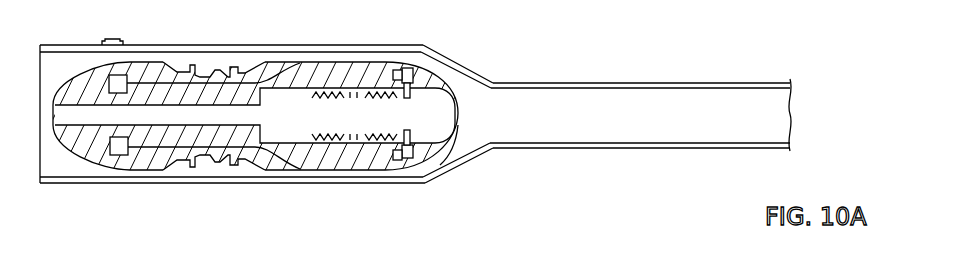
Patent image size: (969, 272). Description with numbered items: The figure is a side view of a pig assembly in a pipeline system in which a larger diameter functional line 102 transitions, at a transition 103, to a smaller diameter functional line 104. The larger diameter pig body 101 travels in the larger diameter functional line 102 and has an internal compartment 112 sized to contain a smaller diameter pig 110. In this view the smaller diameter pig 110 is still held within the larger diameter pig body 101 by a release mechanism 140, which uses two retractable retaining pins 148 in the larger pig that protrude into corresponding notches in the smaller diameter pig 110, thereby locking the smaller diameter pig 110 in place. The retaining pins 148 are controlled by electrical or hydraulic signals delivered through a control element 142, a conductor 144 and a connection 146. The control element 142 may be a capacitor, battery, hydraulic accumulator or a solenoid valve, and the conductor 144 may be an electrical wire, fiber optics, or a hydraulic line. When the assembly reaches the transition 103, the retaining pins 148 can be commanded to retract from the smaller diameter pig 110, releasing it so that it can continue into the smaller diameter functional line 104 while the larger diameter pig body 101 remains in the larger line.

The larger diameter pig body 101 is at (85, 155).
The larger diameter functional line 102 is at (360, 45).
The transition 103 is at (463, 67).
The smaller diameter functional line 104 is at (543, 82).
The smaller diameter pig 110 is at (437, 124).
The internal compartment 112 is at (113, 39).
The release mechanism 140 is at (309, 40).
The control element 142 is at (118, 156).
The conductor 144 is at (175, 162).
The connection 146 is at (392, 163).
The retaining pins 148 is at (423, 163).